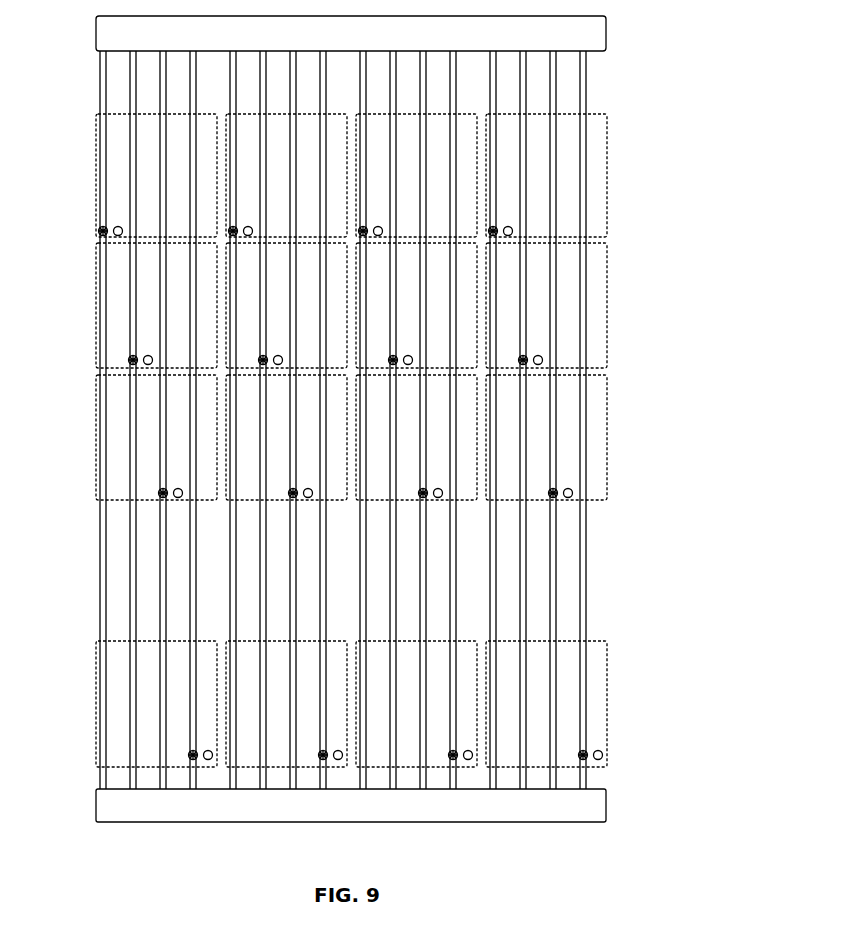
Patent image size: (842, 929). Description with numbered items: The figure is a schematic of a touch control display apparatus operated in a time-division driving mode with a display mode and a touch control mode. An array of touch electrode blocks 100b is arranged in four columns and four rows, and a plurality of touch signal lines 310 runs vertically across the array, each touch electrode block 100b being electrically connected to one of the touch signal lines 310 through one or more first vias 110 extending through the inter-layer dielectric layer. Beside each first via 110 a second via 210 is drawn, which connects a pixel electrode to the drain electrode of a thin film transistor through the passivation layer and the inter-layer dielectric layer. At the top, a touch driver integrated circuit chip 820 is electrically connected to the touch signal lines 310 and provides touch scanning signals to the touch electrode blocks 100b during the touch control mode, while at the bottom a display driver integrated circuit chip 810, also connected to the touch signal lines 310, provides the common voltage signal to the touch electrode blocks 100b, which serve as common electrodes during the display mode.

The touch driver integrated circuit chip 820 is at (606, 33).
The display driver integrated circuit chip 810 is at (603, 805).
The touch signal lines 310 is at (100, 570).
The touch electrode blocks 100b is at (593, 183).
The first vias 110 is at (100, 233).
The second vias 210 is at (118, 225).